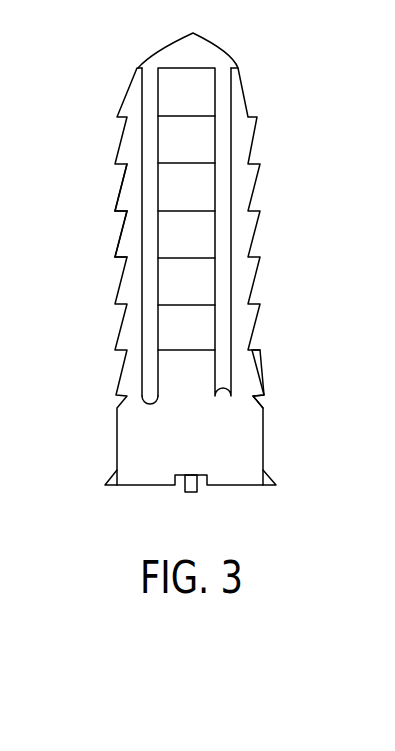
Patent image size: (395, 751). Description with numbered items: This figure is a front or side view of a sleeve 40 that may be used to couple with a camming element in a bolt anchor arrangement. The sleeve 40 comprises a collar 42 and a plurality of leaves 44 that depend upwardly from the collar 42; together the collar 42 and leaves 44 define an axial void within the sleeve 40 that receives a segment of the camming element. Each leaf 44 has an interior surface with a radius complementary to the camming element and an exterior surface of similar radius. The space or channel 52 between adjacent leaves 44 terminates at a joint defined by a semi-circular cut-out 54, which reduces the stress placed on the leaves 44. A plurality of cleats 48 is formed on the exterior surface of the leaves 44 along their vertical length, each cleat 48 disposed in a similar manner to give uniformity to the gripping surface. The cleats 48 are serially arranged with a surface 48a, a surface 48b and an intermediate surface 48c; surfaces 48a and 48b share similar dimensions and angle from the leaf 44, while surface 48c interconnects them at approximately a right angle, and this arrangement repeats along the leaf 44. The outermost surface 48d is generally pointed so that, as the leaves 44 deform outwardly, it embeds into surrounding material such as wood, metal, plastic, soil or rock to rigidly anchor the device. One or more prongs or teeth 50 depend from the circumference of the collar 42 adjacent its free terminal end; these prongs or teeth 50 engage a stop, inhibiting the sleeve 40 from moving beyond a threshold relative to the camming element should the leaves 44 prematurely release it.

The sleeve 40 is at (68, 106).
The collar 42 is at (198, 449).
The leaves 44 is at (177, 68).
The cleats 48 is at (197, 150).
The surface 48a is at (120, 193).
The surface 48b is at (120, 256).
The surface 48c is at (123, 222).
The outermost surface 48d is at (124, 212).
The prongs or teeth 50 is at (191, 492).
The channel 52 is at (152, 330).
The semi-circular cut-out 54 is at (152, 406).